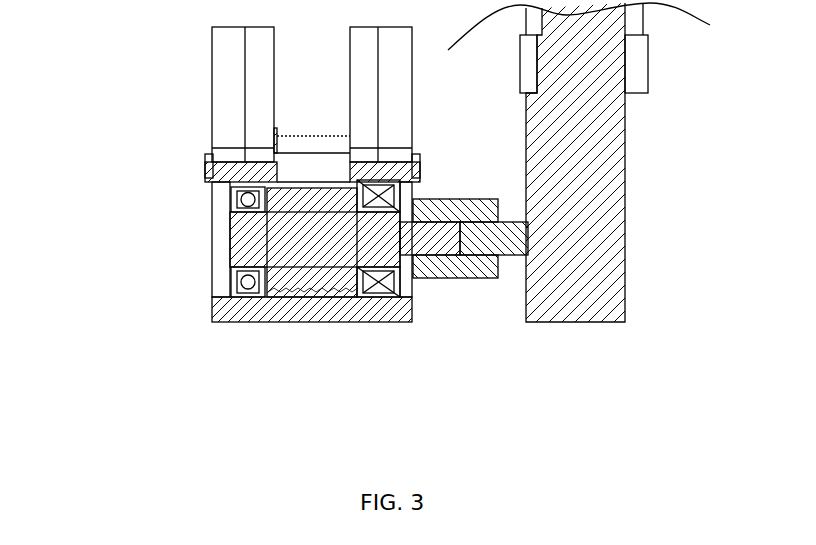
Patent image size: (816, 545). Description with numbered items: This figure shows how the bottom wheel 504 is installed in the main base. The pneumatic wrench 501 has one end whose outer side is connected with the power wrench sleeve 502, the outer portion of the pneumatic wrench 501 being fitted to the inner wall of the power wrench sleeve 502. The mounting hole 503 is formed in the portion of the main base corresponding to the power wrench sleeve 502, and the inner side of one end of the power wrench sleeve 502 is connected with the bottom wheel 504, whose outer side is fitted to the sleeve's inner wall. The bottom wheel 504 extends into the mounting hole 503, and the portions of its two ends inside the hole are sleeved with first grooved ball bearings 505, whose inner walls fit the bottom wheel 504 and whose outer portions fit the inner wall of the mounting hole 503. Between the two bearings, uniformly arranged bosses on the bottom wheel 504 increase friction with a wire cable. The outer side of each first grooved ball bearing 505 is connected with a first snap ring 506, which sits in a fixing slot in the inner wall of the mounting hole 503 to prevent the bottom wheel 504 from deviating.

The pneumatic wrench 501 is at (588, 240).
The power wrench sleeve 502 is at (467, 273).
The mounting hole 503 is at (409, 287).
The bottom wheel 504 is at (320, 260).
The first grooved ball bearing 505 is at (240, 287).
The first snap ring 506 is at (223, 242).